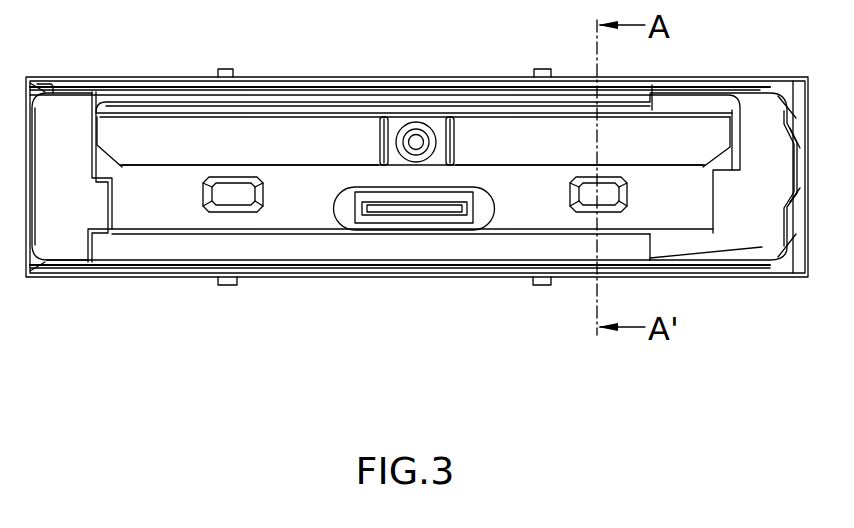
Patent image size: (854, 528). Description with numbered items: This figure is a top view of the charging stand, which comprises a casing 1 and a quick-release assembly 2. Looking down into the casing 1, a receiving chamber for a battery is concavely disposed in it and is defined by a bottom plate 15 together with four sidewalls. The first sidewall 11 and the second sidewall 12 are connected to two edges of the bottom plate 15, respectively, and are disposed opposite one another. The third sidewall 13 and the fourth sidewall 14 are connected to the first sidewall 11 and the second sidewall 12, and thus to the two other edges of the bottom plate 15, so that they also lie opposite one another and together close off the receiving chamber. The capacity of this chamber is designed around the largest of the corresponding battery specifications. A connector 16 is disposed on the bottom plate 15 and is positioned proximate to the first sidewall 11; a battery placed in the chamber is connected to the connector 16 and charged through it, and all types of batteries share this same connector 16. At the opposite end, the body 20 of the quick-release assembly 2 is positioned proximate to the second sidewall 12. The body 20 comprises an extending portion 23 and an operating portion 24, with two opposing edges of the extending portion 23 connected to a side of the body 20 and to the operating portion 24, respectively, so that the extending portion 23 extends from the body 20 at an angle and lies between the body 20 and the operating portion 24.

The casing 1 is at (742, 90).
The quick-release assembly 2 is at (700, 130).
The first sidewall 11 is at (148, 262).
The second sidewall 12 is at (130, 80).
The third sidewall 13 is at (724, 210).
The fourth sidewall 14 is at (101, 207).
The bottom plate 15 is at (312, 213).
The connector 16 is at (373, 212).
The body 20 is at (316, 137).
The extending portion 23 is at (183, 137).
The operating portion 24 is at (259, 102).